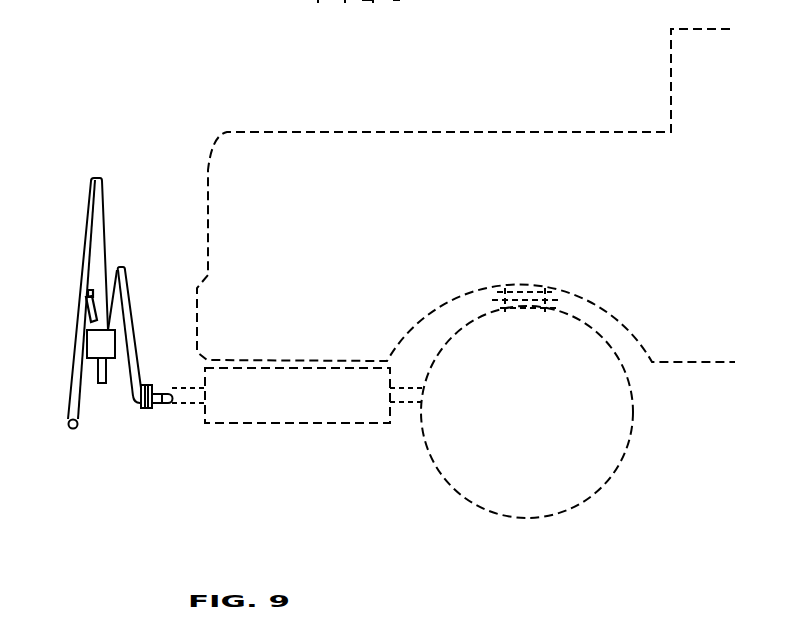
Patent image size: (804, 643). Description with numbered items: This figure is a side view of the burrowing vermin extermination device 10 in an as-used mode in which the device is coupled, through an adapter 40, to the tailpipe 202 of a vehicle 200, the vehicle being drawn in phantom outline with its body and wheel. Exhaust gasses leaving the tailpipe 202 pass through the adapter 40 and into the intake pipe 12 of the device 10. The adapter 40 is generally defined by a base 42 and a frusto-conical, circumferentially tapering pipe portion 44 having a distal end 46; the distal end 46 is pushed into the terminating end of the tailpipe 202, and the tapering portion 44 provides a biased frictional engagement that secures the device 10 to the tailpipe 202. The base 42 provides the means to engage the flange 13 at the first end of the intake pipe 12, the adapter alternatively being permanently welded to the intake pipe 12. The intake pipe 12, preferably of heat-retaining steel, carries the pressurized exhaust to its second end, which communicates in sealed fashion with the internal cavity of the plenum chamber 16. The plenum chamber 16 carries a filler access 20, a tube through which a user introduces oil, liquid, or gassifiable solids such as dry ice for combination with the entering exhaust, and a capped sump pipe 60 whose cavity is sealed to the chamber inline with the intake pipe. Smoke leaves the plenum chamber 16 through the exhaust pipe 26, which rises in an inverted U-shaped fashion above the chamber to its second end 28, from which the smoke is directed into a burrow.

The burrowing vermin extermination device 10 is at (91, 152).
The exhaust pipe 26 is at (83, 245).
The second end 28 is at (69, 426).
The filler access 20 is at (90, 320).
The plenum chamber 16 is at (88, 347).
The sump pipe 60 is at (102, 383).
The intake pipe 12 is at (127, 283).
The adapter 40 is at (153, 472).
The flange 13 is at (142, 405).
The base 42 is at (150, 385).
The frusto-conical pipe portion 44 is at (162, 404).
The distal end 46 is at (175, 403).
The vehicle 200 is at (455, 193).
The tailpipe 202 is at (203, 368).